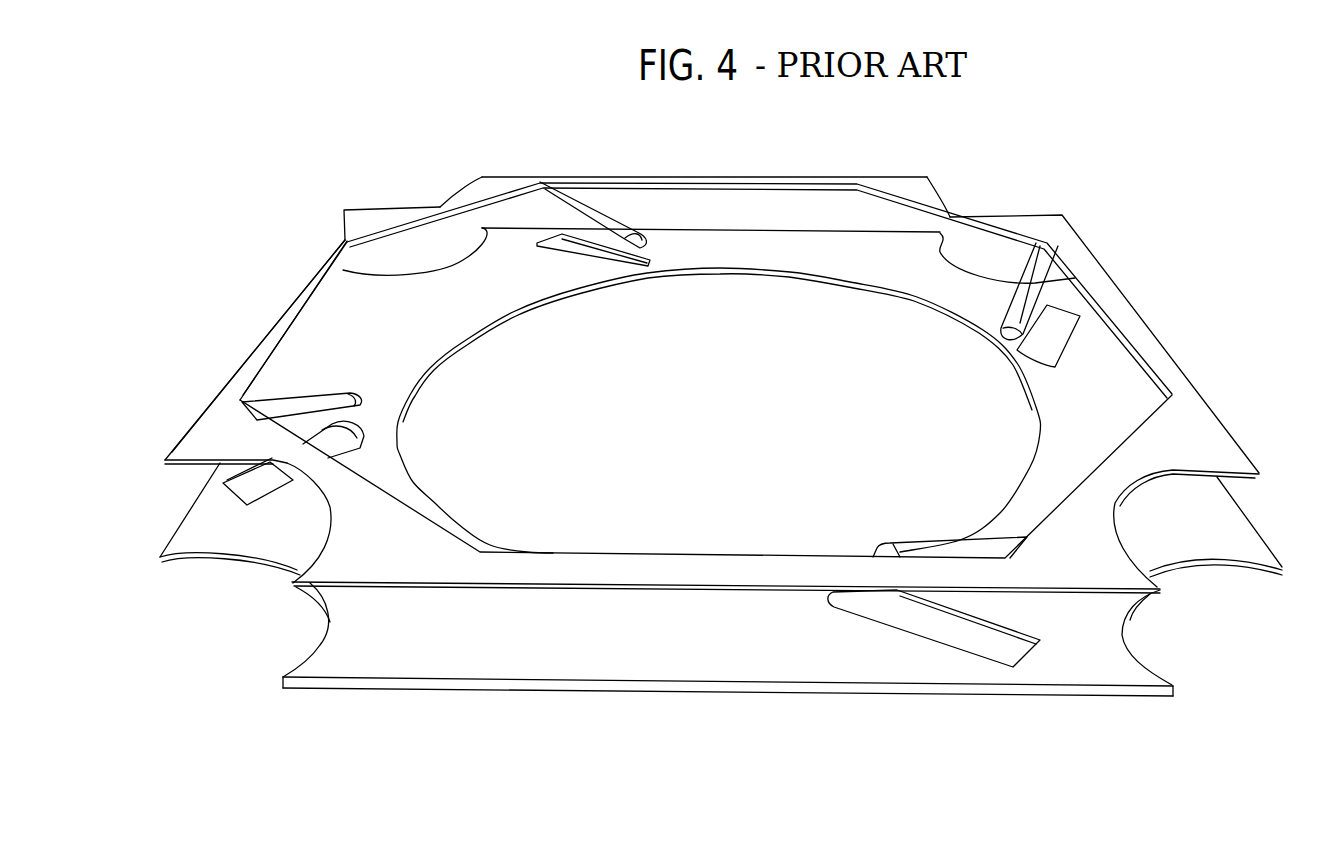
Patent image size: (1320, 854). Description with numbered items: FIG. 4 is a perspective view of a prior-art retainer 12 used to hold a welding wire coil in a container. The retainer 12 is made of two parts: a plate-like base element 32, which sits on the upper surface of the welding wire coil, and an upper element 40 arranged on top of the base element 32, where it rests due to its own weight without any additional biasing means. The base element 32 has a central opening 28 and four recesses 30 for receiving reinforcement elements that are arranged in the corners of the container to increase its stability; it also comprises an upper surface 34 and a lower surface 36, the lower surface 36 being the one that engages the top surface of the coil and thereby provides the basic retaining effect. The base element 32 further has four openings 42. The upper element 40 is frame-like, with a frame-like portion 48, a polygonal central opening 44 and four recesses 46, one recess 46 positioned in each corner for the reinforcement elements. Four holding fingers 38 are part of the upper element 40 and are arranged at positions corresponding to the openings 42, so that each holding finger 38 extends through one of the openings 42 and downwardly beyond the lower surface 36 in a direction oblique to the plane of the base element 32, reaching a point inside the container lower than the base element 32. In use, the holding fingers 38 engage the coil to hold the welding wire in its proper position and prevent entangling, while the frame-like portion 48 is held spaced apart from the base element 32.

The retainer 12 is at (268, 198).
The central opening 28 is at (731, 310).
The recesses 30 is at (448, 247).
The base element 32 is at (640, 648).
The upper surface 34 is at (433, 655).
The lower surface 36 is at (385, 690).
The holding fingers 38 is at (597, 203).
The upper element 40 is at (806, 200).
The openings 42 is at (587, 250).
The polygonal central opening 44 is at (768, 205).
The recesses 46 is at (393, 198).
The frame-like portion 48 is at (287, 311).